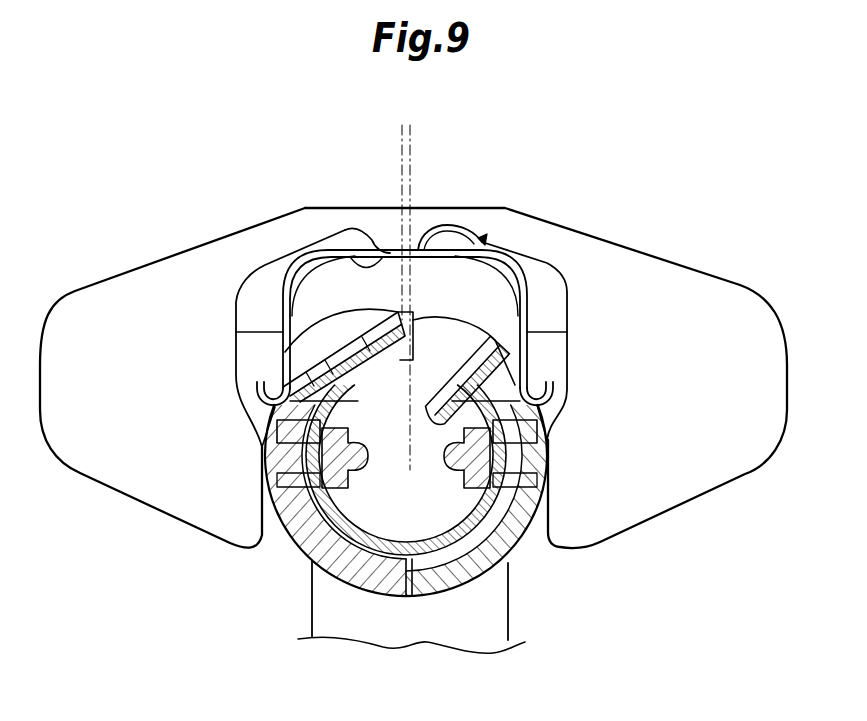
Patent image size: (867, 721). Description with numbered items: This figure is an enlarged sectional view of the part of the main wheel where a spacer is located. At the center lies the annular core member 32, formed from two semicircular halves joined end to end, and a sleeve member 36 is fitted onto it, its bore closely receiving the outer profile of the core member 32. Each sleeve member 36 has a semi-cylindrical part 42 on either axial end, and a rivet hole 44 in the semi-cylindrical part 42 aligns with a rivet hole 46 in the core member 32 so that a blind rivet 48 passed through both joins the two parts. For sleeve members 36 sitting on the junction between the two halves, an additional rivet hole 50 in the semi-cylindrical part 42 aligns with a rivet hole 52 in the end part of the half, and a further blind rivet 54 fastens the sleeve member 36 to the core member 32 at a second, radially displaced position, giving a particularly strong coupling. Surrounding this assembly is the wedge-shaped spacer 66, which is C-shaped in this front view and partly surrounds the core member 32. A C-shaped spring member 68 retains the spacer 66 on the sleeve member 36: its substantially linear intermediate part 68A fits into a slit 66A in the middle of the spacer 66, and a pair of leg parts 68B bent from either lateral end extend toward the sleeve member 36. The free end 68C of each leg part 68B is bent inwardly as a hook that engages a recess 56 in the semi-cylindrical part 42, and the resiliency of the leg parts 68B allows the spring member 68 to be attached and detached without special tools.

The core member 32 is at (503, 572).
The sleeve member 36 is at (388, 595).
The semi-cylindrical part 42 is at (530, 545).
The rivet hole 44 is at (268, 463).
The rivet hole 46 is at (300, 525).
The blind rivet 48 is at (356, 462).
The rivet hole 50 is at (343, 356).
The rivet hole 52 is at (432, 427).
The blind rivet 54 is at (503, 340).
The recess 56 is at (265, 405).
The spacer 66 is at (709, 295).
The slit 66A is at (352, 232).
The C-shaped spring member 68 is at (497, 250).
The intermediate part 68A is at (420, 249).
The leg part 68B is at (281, 312).
The free end 68C is at (265, 397).